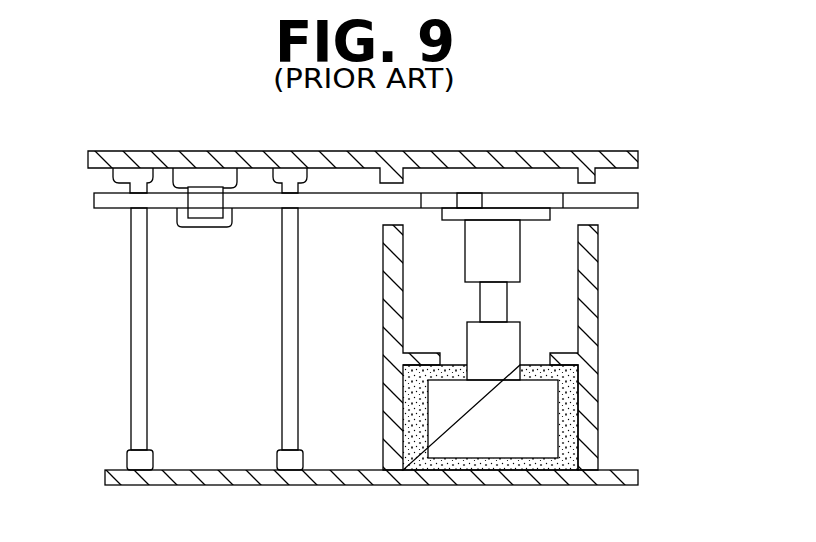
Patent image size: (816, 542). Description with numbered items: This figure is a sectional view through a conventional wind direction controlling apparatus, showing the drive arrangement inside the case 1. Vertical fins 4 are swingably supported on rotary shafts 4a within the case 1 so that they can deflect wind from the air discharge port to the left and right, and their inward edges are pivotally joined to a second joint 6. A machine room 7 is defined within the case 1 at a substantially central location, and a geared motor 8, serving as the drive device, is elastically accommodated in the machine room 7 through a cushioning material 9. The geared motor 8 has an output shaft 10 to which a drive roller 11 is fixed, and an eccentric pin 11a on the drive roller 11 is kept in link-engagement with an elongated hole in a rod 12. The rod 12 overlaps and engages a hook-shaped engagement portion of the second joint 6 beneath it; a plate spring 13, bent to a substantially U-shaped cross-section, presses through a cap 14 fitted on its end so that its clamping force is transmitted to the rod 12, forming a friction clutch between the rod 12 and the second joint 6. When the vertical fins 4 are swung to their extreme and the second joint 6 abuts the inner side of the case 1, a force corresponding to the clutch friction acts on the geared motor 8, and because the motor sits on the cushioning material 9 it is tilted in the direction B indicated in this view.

The case 1 is at (520, 152).
The vertical fins 4 is at (149, 352).
The rotary shafts 4a is at (122, 172).
The second joint 6 is at (233, 222).
The machine room 7 is at (599, 300).
The geared motor 8 is at (521, 331).
The cushioning material 9 is at (453, 366).
The output shaft 10 is at (508, 292).
The drive roller 11 is at (563, 200).
The eccentric pin 11a is at (467, 200).
The rod 12 is at (421, 198).
The plate spring 13 is at (205, 228).
The cap 14 is at (175, 152).
The tilting direction B is at (527, 238).